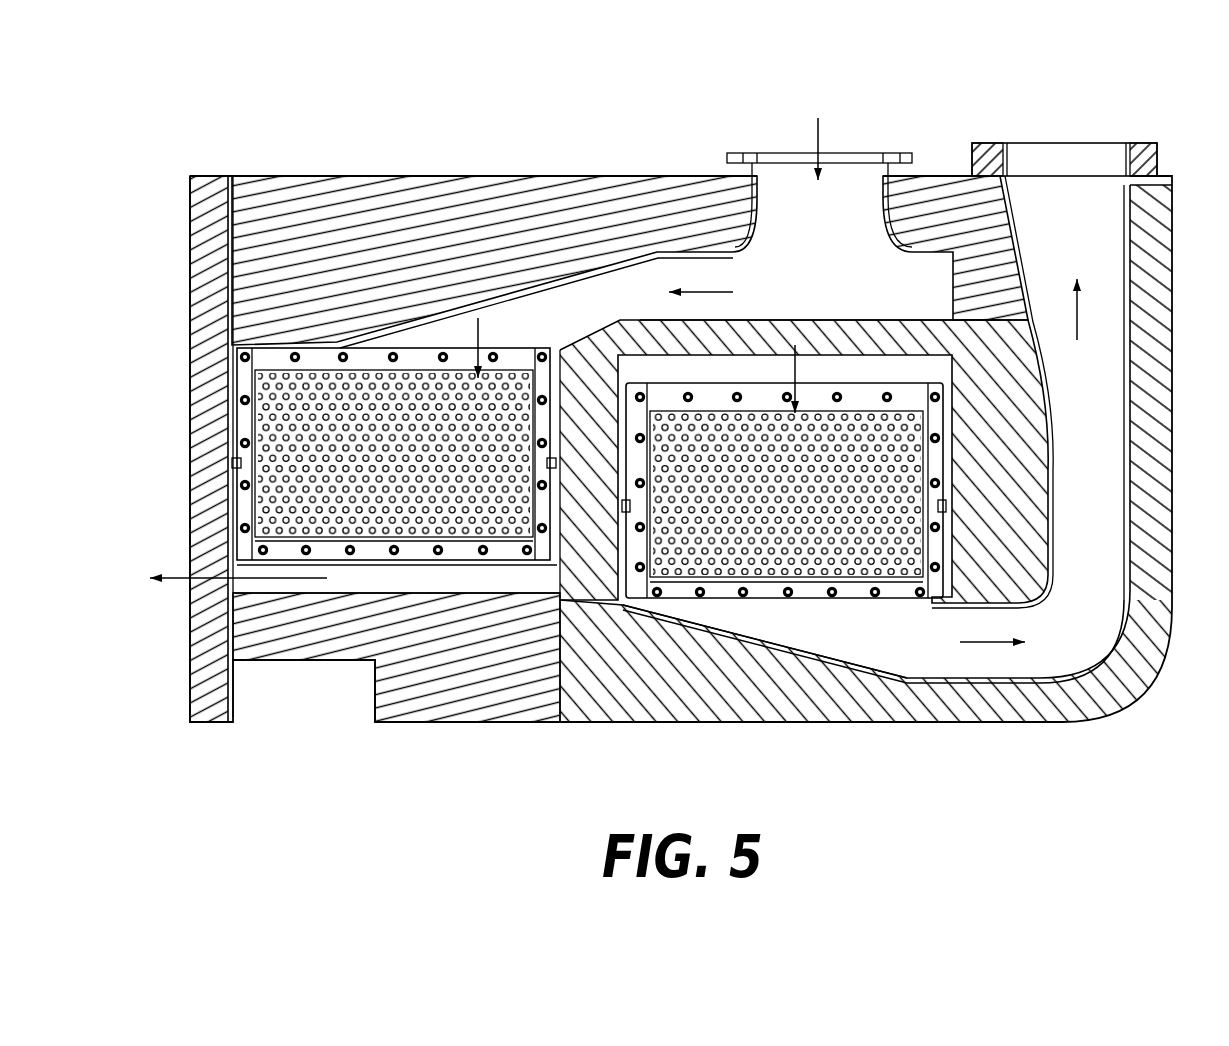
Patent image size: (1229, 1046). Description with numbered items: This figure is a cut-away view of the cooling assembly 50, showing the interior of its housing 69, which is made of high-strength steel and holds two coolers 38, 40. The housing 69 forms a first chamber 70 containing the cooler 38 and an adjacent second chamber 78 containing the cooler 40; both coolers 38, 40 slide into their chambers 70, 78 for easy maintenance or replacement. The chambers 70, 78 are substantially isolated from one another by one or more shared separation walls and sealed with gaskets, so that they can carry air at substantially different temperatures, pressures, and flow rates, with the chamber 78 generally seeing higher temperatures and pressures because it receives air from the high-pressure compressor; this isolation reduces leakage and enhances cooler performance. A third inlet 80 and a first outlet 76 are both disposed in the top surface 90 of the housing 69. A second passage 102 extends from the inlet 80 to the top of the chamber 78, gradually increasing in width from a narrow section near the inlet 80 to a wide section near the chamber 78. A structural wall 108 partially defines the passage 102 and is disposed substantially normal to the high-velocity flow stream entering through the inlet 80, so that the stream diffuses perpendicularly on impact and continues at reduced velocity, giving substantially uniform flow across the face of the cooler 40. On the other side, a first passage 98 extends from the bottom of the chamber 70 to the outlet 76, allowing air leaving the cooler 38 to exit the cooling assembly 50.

The cooling assembly 50 is at (307, 130).
The housing 69 is at (190, 642).
The top surface 90 is at (537, 193).
The third inlet 80 is at (747, 200).
The first outlet 76 is at (1057, 177).
The second passage 102 is at (905, 305).
The structural wall 108 is at (770, 320).
The first chamber 70 is at (764, 618).
The first passage 98 is at (896, 654).
The second chamber 78 is at (452, 588).
The cooler 40 is at (408, 475).
The cooler 38 is at (802, 515).